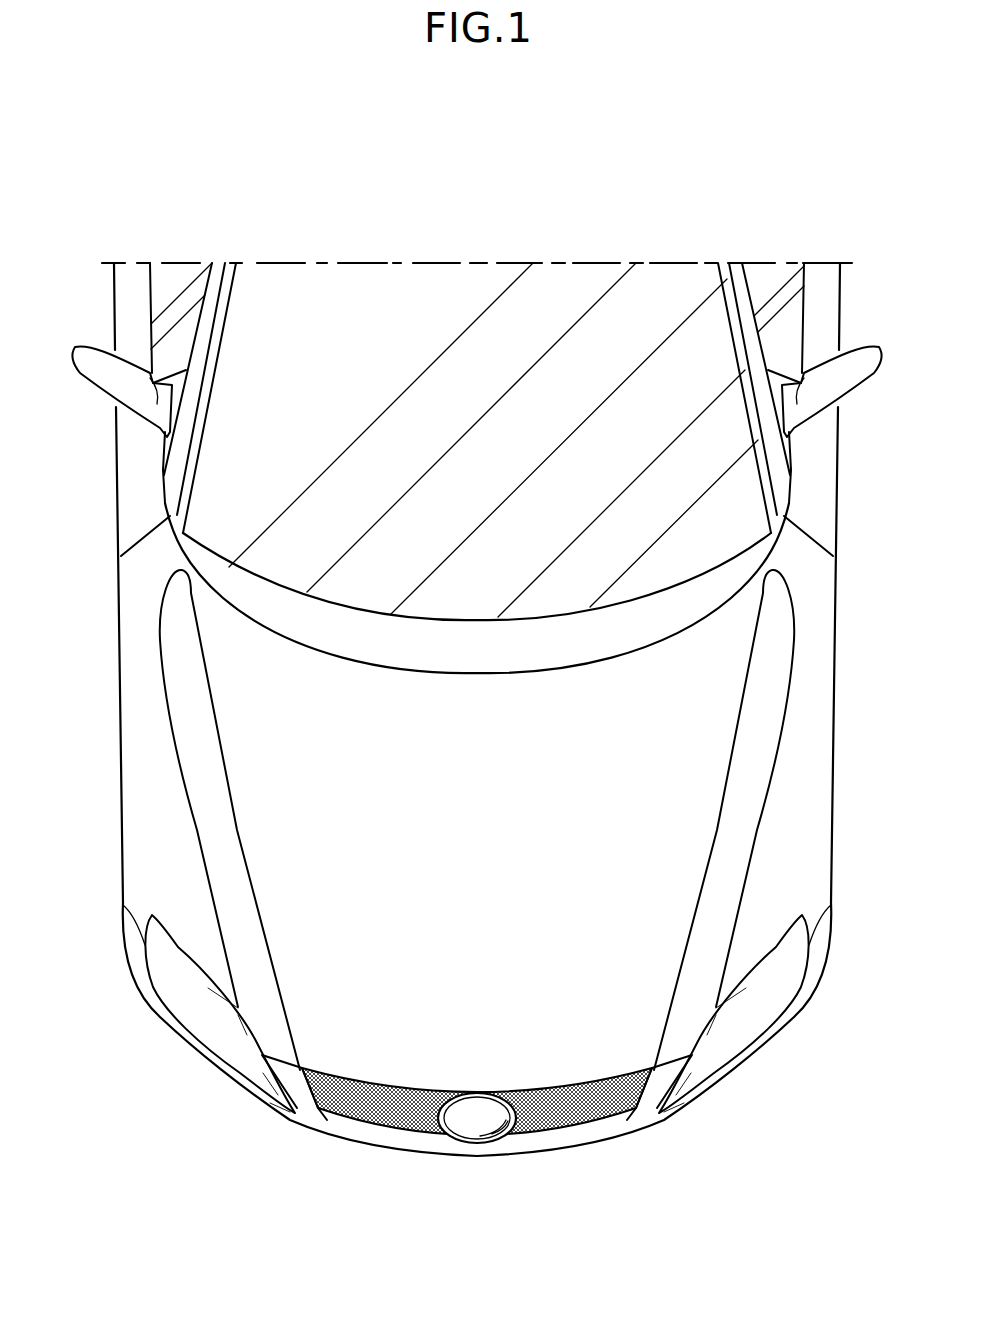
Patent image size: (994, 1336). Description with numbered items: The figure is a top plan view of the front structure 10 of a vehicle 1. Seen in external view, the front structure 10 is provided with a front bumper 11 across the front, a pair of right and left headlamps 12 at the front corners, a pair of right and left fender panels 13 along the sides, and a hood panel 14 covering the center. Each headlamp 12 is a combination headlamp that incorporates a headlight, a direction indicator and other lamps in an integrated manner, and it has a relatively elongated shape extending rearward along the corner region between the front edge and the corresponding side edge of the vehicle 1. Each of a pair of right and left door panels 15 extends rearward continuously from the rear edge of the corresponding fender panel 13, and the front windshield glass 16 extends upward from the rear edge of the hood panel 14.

The vehicle 1 is at (614, 247).
The front structure 10 is at (767, 1157).
The front bumper 11 is at (568, 1138).
The headlamp 12 is at (193, 1037).
The fender panel 13 is at (140, 768).
The hood panel 14 is at (392, 1060).
The door panel 15 is at (138, 462).
The front windshield glass 16 is at (440, 292).